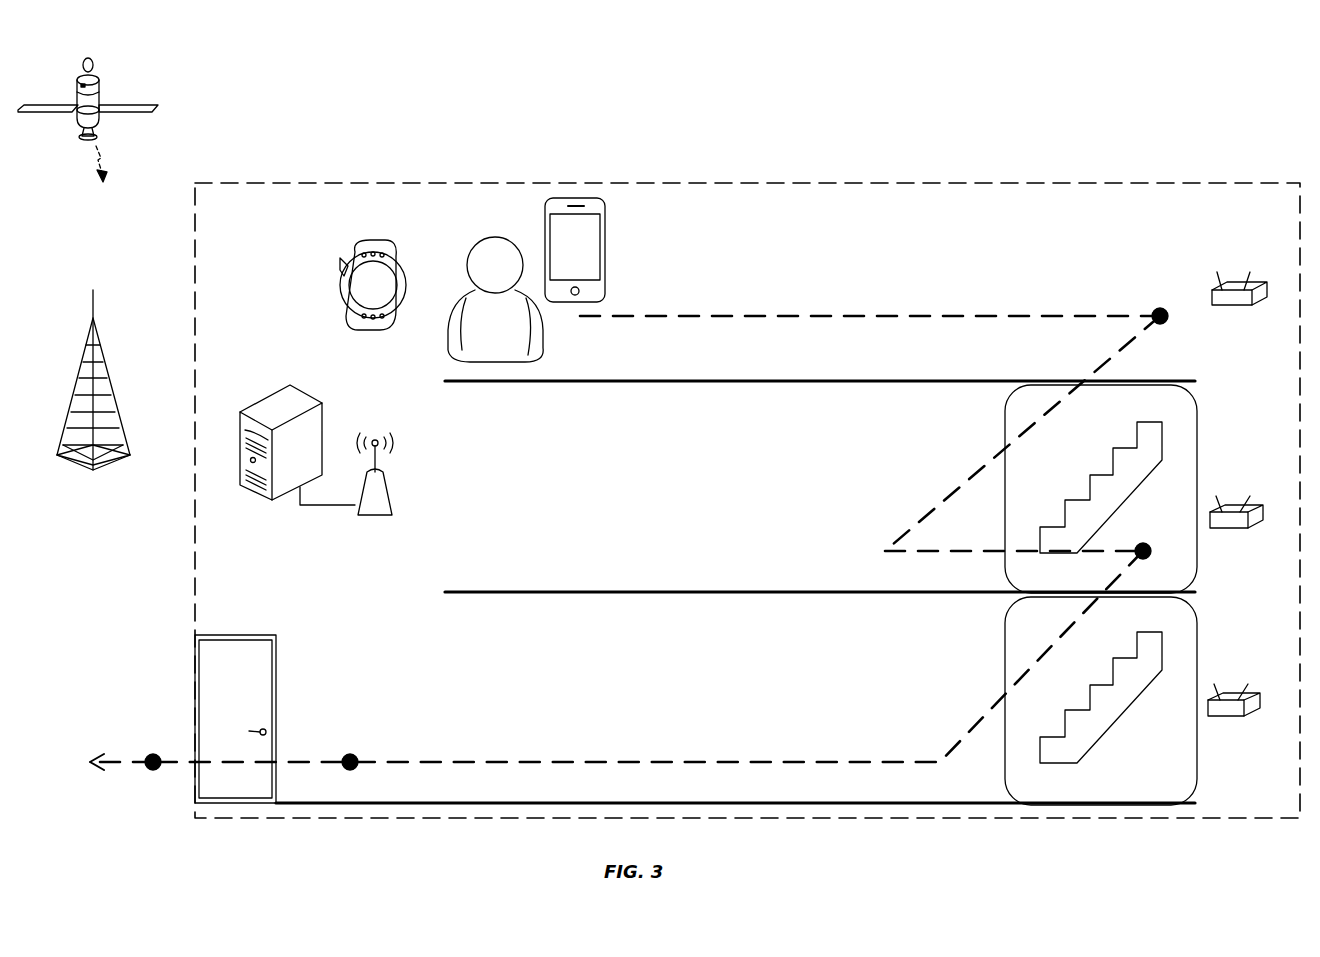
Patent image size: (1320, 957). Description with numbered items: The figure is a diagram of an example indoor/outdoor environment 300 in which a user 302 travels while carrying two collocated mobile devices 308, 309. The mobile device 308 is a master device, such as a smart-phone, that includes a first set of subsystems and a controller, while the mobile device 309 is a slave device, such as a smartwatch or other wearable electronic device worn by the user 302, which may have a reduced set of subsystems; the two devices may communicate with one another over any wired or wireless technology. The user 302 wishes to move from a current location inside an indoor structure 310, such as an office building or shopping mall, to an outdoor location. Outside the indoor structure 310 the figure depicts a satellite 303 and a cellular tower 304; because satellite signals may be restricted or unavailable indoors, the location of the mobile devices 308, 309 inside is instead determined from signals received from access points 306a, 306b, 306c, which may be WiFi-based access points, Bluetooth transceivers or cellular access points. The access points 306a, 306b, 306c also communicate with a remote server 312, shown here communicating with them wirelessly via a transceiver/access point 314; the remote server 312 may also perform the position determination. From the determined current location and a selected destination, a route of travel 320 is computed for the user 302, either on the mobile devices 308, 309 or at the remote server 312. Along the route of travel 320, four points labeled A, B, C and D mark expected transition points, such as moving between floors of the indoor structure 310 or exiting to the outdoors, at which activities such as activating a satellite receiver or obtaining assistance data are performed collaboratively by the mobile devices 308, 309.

The indoor/outdoor environment 300 is at (1016, 118).
The user 302 is at (495, 236).
The satellite 303 is at (102, 84).
The cellular tower 304 is at (86, 345).
The access point 306a is at (1212, 290).
The access point 306b is at (1222, 528).
The access point 306c is at (1220, 716).
The mobile device 308 is at (601, 232).
The mobile device 309 is at (348, 255).
The indoor structure 310 is at (752, 183).
The remote server 312 is at (276, 392).
The transceiver/access point 314 is at (373, 516).
The route of travel 320 is at (752, 316).